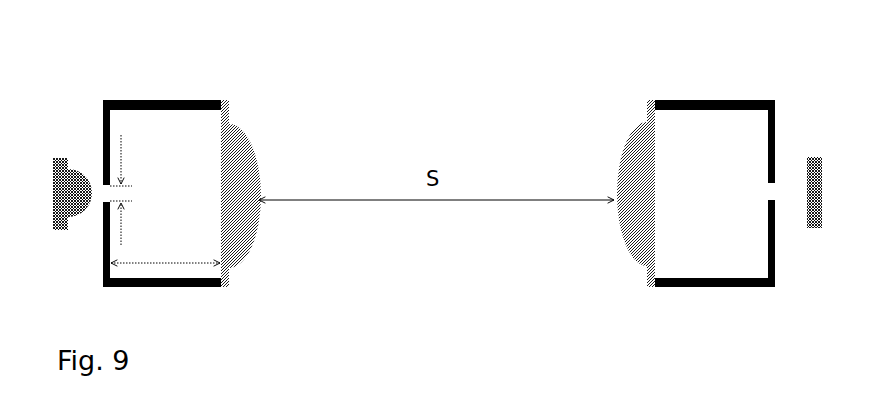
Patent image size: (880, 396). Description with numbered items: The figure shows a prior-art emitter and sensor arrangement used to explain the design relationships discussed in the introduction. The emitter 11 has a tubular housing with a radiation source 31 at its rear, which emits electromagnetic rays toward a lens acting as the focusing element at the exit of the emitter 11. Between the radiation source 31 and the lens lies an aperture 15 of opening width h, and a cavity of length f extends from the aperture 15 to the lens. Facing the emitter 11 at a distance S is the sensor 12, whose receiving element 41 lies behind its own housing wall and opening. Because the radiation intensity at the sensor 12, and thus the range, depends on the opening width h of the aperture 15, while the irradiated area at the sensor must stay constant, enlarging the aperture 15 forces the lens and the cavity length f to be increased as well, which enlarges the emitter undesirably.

The emitter 11 is at (193, 159).
The sensor 12 is at (662, 159).
The aperture 15 is at (99, 180).
The radiation source 31 is at (80, 228).
The receiver element 41 is at (823, 230).